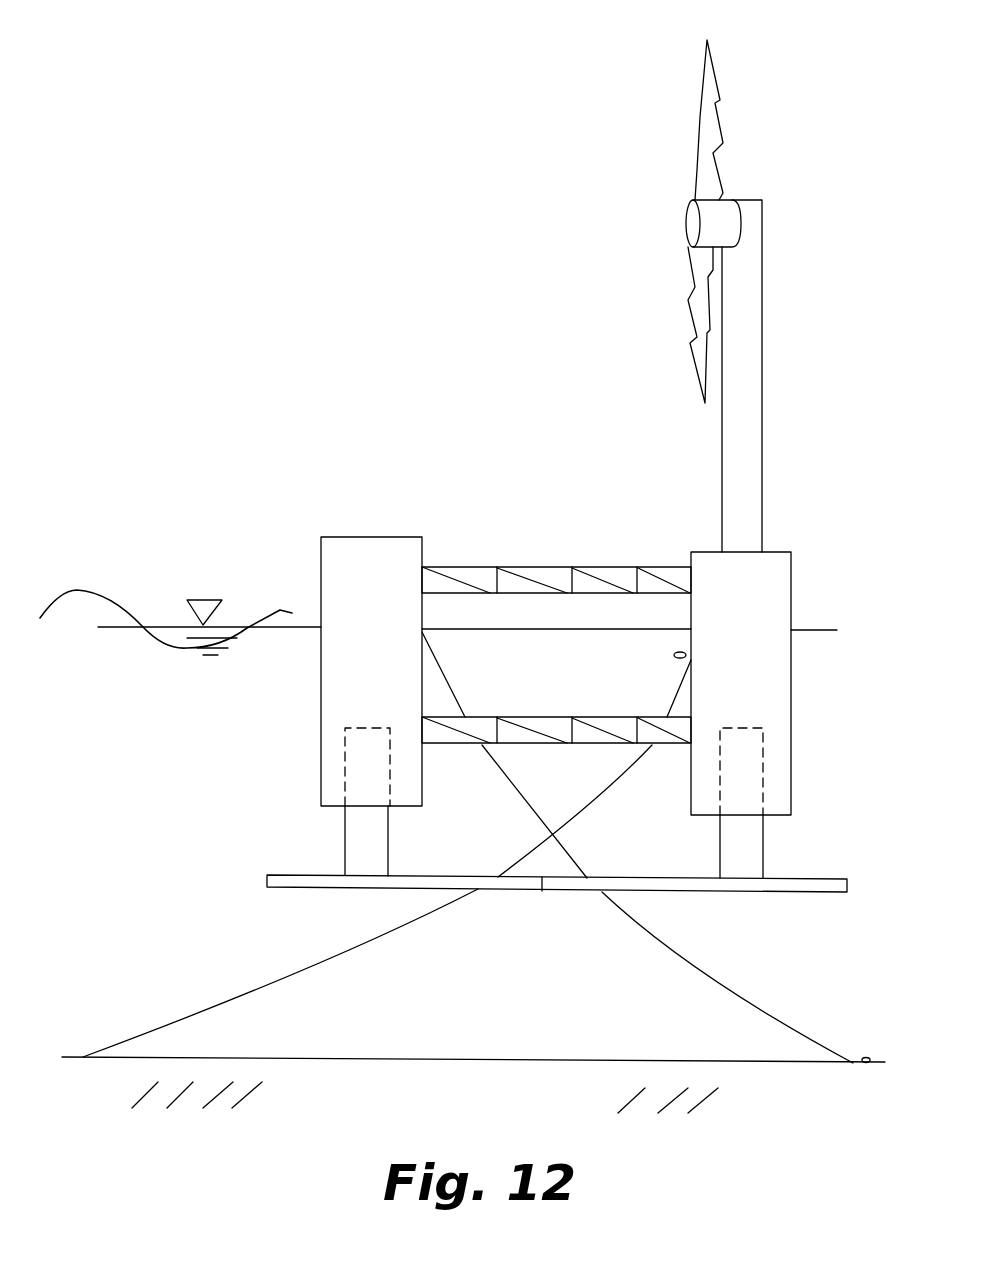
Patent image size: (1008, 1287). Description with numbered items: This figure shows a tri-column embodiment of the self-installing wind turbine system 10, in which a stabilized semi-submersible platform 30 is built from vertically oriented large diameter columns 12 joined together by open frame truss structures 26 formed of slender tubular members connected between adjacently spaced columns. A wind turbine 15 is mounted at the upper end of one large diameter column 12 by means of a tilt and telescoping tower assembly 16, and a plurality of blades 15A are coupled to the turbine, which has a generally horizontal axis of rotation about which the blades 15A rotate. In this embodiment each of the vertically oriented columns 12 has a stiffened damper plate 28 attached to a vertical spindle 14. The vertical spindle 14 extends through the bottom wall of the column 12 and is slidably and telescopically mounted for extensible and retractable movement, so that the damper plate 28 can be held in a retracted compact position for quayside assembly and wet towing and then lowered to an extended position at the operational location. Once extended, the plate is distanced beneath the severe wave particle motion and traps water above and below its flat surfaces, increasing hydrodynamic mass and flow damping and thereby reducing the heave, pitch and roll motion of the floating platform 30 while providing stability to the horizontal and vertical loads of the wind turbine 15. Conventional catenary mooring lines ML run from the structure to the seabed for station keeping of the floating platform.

The self-installing wind turbine system 10 is at (458, 351).
The large diameter column 12 is at (377, 661).
The vertical spindle 14 is at (390, 850).
The wind turbine 15 is at (690, 226).
The blades 15A is at (698, 132).
The tilt and telescoping tower assembly 16 is at (763, 388).
The open frame truss structures 26 is at (533, 567).
The stiffened damper plate 28 is at (292, 888).
The stabilized semi-submersible platform 30 is at (433, 504).
The catenary mooring lines ML is at (257, 993).